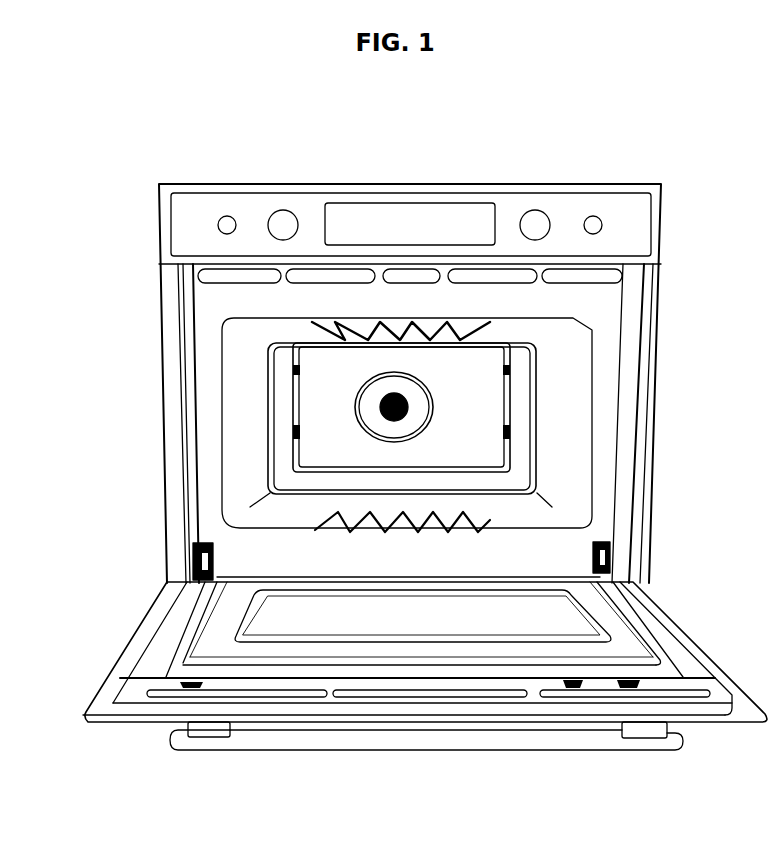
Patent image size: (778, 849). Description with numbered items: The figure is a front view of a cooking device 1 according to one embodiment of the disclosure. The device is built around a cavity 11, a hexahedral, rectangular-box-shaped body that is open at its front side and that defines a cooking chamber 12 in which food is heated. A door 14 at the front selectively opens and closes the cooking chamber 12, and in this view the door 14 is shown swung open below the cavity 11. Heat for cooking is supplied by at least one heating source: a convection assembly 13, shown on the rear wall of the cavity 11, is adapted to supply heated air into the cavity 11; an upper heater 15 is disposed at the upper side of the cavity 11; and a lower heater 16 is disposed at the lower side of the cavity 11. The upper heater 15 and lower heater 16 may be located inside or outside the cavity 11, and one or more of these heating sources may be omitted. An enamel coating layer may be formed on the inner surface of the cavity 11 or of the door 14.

The cooking device 1 is at (108, 152).
The cavity 11 is at (222, 342).
The cooking chamber 12 is at (262, 340).
The convection assembly 13 is at (338, 407).
The door 14 is at (118, 644).
The upper heater 15 is at (543, 343).
The lower heater 16 is at (483, 527).